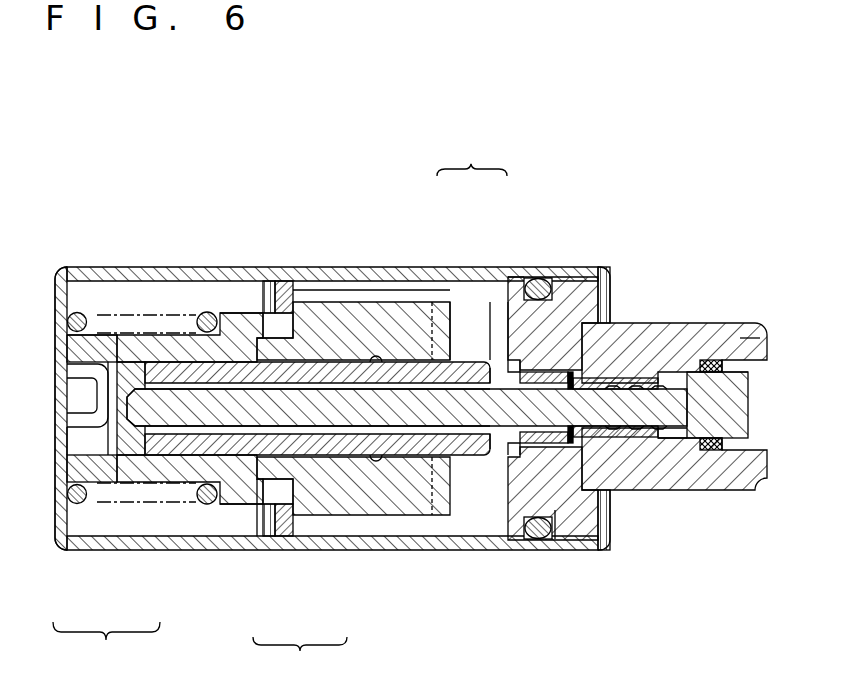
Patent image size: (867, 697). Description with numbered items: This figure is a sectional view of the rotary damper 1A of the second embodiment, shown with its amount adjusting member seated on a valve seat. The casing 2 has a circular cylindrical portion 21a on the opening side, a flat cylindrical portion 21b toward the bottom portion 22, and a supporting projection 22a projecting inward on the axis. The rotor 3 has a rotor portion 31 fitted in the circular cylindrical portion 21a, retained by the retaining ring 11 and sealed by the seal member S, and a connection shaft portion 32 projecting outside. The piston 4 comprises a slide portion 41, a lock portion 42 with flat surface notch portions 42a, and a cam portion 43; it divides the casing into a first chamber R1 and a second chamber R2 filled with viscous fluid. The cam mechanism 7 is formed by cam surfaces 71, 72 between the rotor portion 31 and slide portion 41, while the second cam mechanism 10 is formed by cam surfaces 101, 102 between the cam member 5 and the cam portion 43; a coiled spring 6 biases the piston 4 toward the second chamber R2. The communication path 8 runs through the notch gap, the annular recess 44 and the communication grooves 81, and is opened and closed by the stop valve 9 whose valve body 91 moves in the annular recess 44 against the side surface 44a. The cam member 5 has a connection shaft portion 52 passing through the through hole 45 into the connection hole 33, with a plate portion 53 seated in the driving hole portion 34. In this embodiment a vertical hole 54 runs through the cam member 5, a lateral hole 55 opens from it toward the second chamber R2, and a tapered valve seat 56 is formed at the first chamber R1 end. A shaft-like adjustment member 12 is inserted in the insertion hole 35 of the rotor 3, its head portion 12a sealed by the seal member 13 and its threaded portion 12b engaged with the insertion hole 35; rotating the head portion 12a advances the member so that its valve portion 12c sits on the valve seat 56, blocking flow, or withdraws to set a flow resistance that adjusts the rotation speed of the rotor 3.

The rotary damper 1A is at (388, 222).
The casing 2 is at (170, 268).
The rotor 3 is at (684, 312).
The piston 4 is at (308, 285).
The cam member 5 is at (88, 317).
The coiled spring 6 is at (208, 505).
The cam mechanism 7 is at (472, 245).
The communication path 8 is at (338, 288).
The stop valve 9 is at (300, 661).
The second cam mechanism 10 is at (106, 647).
The retaining ring 11 is at (598, 518).
The adjustment member 12 is at (752, 412).
The head portion 12a is at (728, 382).
The threaded portion 12b is at (632, 398).
The valve portion 12c is at (150, 505).
The seal member 13 is at (705, 450).
The circular cylindrical portion 21a is at (522, 280).
The flat cylindrical portion 21b is at (96, 320).
The bottom portion 22 is at (55, 318).
The supporting projection 22a is at (57, 438).
The rotor portion 31 is at (562, 372).
The connection shaft portion 32 is at (703, 338).
The connection hole 33 is at (538, 372).
The driving hole portion 34 is at (582, 370).
The insertion hole 35 is at (672, 440).
The slide portion 41 is at (415, 497).
The lock portion 42 is at (240, 496).
The flat surface notch portion 42a is at (236, 313).
The cam portion 43 is at (188, 342).
The annular recess 44 is at (270, 283).
The side surface 44a is at (305, 520).
The through hole 45 is at (380, 362).
The connection shaft portion 52 is at (370, 456).
The plate portion 53 is at (568, 522).
The vertical hole 54 is at (400, 515).
The lateral hole 55 is at (500, 350).
The valve seat 56 is at (147, 358).
The cam surface 71 is at (480, 305).
The cam surface 72 is at (470, 303).
The communication groove 81 is at (372, 288).
The valve body 91 is at (275, 520).
The cam surface 101 is at (95, 536).
The cam surface 102 is at (125, 536).
The first chamber R1 is at (88, 518).
The second chamber R2 is at (470, 500).
The seal member S is at (540, 539).